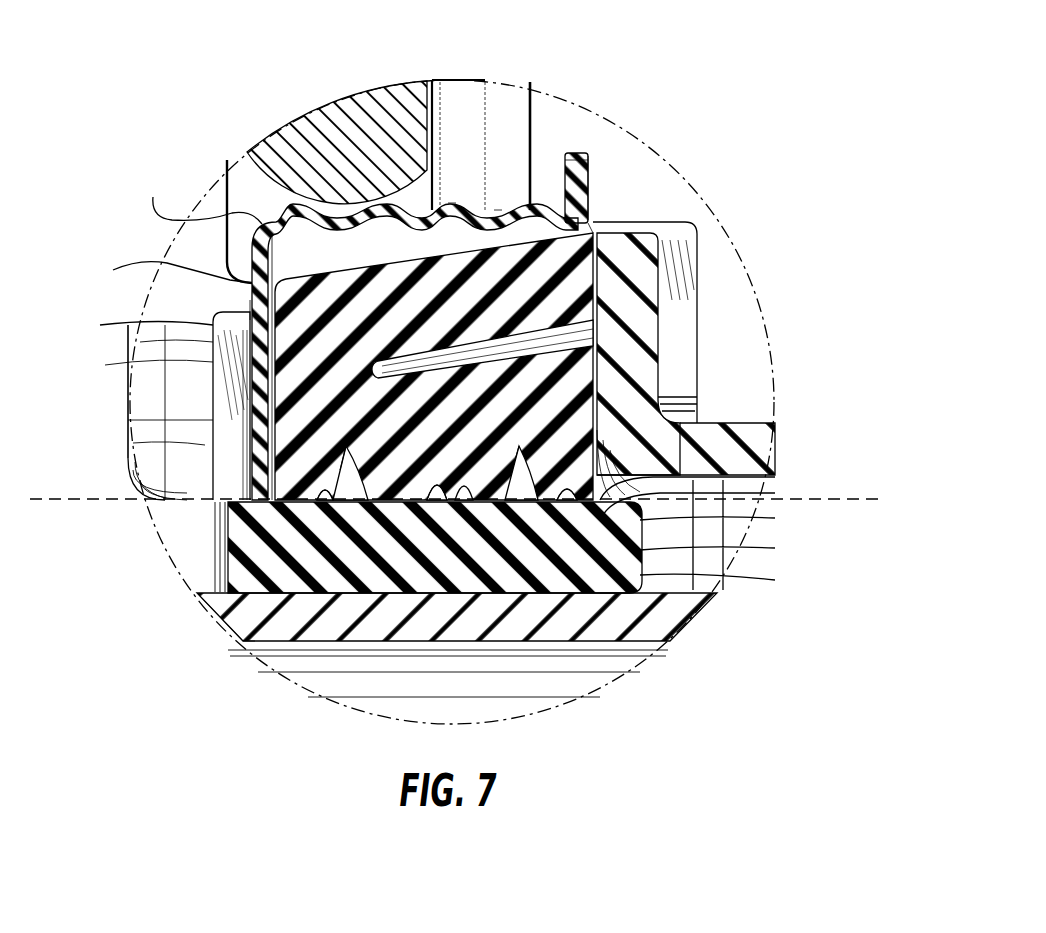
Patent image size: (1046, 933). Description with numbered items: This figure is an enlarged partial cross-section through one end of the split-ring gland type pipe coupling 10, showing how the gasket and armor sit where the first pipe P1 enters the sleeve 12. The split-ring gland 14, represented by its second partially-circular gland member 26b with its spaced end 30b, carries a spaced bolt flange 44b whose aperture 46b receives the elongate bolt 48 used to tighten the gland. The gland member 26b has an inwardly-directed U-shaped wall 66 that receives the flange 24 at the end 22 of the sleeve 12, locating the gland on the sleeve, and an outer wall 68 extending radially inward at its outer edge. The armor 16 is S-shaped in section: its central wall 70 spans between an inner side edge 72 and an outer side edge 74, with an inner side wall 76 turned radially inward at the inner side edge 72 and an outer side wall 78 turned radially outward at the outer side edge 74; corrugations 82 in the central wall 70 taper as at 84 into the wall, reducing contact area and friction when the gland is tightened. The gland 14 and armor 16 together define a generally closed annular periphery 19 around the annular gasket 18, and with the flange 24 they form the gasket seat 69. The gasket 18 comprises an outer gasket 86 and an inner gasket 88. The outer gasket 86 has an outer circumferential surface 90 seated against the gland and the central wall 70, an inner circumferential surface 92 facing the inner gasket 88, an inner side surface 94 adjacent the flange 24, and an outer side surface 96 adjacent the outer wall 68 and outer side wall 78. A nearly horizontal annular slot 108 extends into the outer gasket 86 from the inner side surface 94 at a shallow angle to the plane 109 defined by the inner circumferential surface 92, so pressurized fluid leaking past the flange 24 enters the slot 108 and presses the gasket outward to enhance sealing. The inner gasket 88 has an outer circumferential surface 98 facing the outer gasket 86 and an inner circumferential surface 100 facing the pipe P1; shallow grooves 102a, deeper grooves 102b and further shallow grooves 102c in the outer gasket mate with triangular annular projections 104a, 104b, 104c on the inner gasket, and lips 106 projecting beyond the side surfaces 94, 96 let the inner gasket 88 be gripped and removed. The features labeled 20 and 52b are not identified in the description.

The pipe coupling 10 is at (139, 219).
The sleeve 12 is at (760, 419).
The split-ring gland 14 is at (152, 512).
The armor 16 is at (593, 164).
The annular gasket 18 is at (197, 595).
The annular periphery 19 is at (335, 238).
The flange 20 is at (763, 440).
The end of the sleeve 22 is at (670, 425).
The flange 24 is at (643, 322).
The second partially-circular gland member 26b is at (158, 498).
The spaced end 30b is at (138, 412).
The spaced bolt flange 44b is at (508, 108).
The aperture 46b is at (238, 190).
The elongate bolt 48 is at (367, 105).
The seal ring 52b is at (188, 384).
The U-shaped wall 66 is at (668, 223).
The outer wall 68 is at (139, 382).
The gasket seat 69 is at (290, 243).
The central wall 70 is at (397, 203).
The inner side edge 72 is at (553, 207).
The outer side edge 74 is at (201, 196).
The inner side wall 76 is at (578, 179).
The outer side wall 78 is at (169, 270).
The corrugations 82 is at (452, 203).
The taper 84 is at (537, 207).
The outer gasket 86 is at (204, 462).
The inner gasket 88 is at (235, 577).
The outer circumferential surface 90 is at (498, 210).
The inner circumferential surface 92 is at (468, 502).
The inner side surface 94 is at (640, 290).
The outer side surface 96 is at (255, 300).
The outer circumferential surface 98 is at (700, 478).
The inner circumferential surface 100 is at (612, 597).
The shallow grooves 102a is at (568, 500).
The deeper grooves 102b is at (326, 500).
The shallow grooves 102c is at (440, 500).
The annular projection 104a is at (521, 460).
The annular projection 104b is at (247, 643).
The annular projection 104c is at (348, 460).
The lips 106 is at (222, 542).
The annular slot 108 is at (593, 226).
The plane 109 is at (860, 498).
The first pipe P1 is at (224, 630).